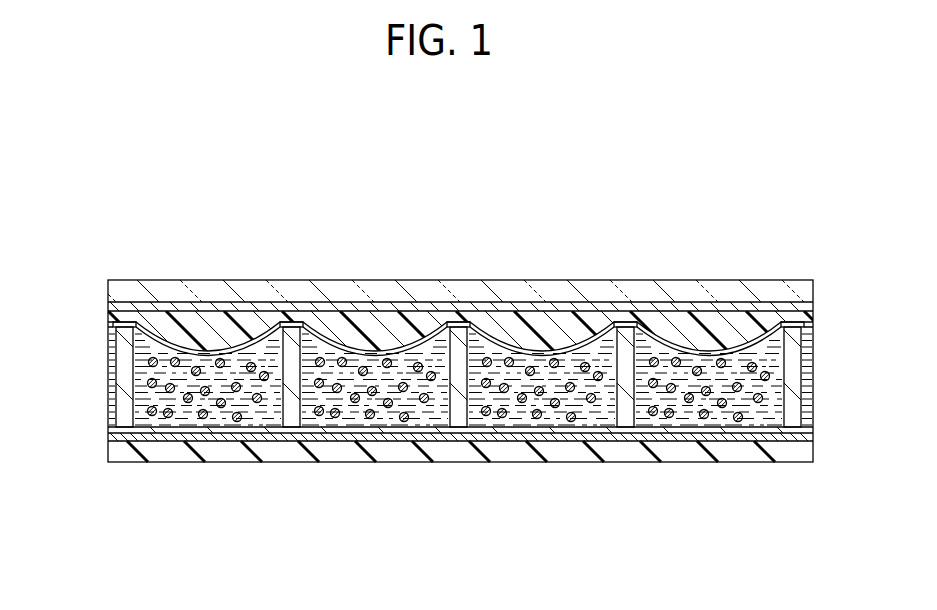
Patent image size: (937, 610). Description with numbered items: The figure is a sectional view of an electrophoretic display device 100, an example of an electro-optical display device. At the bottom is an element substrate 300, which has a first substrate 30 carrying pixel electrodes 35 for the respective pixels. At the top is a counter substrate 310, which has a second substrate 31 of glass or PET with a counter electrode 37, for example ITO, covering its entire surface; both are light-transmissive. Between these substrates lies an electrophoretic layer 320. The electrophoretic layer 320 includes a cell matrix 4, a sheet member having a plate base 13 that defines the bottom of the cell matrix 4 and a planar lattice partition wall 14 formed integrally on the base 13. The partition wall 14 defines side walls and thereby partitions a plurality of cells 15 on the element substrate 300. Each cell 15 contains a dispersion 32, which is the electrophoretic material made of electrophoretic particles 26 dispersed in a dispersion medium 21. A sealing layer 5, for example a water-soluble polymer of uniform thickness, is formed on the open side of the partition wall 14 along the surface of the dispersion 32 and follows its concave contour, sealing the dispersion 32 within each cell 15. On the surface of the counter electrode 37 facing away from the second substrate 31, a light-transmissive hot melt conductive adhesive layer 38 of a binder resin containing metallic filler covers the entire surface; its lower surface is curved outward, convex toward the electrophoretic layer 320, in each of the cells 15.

The electrophoretic display device 100 is at (342, 194).
The second substrate 31 is at (113, 290).
The counter electrode 37 is at (110, 306).
The hot melt conductive adhesive layer 38 is at (106, 318).
The counter substrate 310 is at (818, 280).
The partition wall 14 is at (457, 340).
The base 13 is at (495, 343).
The cell matrix 4 is at (527, 223).
The sealing layer 5 is at (692, 348).
The cells 15 is at (245, 341).
The electrophoretic layer 320 is at (818, 335).
The electrophoretic particles 26 is at (565, 420).
The dispersion medium 21 is at (610, 415).
The dispersion 32 is at (625, 527).
The pixel electrodes 35 is at (442, 440).
The first substrate 30 is at (508, 450).
The element substrate 300 is at (818, 433).